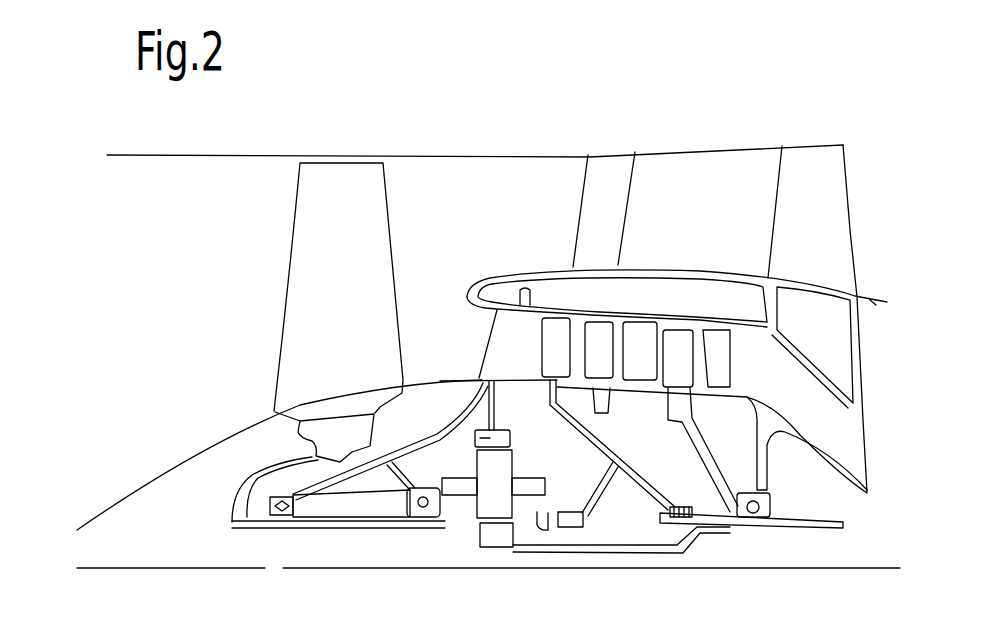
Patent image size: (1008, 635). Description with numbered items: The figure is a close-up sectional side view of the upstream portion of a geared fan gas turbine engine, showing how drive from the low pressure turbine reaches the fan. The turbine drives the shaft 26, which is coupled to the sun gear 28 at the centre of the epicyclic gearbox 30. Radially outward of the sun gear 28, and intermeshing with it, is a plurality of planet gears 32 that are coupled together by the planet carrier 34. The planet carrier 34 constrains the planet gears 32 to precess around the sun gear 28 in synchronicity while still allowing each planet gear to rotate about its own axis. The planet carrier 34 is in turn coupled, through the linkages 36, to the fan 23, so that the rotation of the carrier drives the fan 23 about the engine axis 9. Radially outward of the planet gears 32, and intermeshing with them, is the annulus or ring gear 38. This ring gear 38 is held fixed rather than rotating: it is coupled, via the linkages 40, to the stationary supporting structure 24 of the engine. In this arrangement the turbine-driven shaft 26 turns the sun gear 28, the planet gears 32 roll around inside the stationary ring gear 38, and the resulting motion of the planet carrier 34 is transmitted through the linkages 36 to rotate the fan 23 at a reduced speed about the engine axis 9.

The engine axis 9 is at (242, 570).
The fan 23 is at (305, 327).
The stationary supporting structure 24 is at (503, 342).
The shaft 26 is at (745, 530).
The sun gear 28 is at (493, 548).
The epicyclic gearbox 30 is at (470, 513).
The planet gears 32 is at (485, 505).
The planet carrier 34 is at (540, 522).
The linkages 36 is at (440, 521).
The ring gear 38 is at (474, 443).
The linkages 40 is at (498, 402).